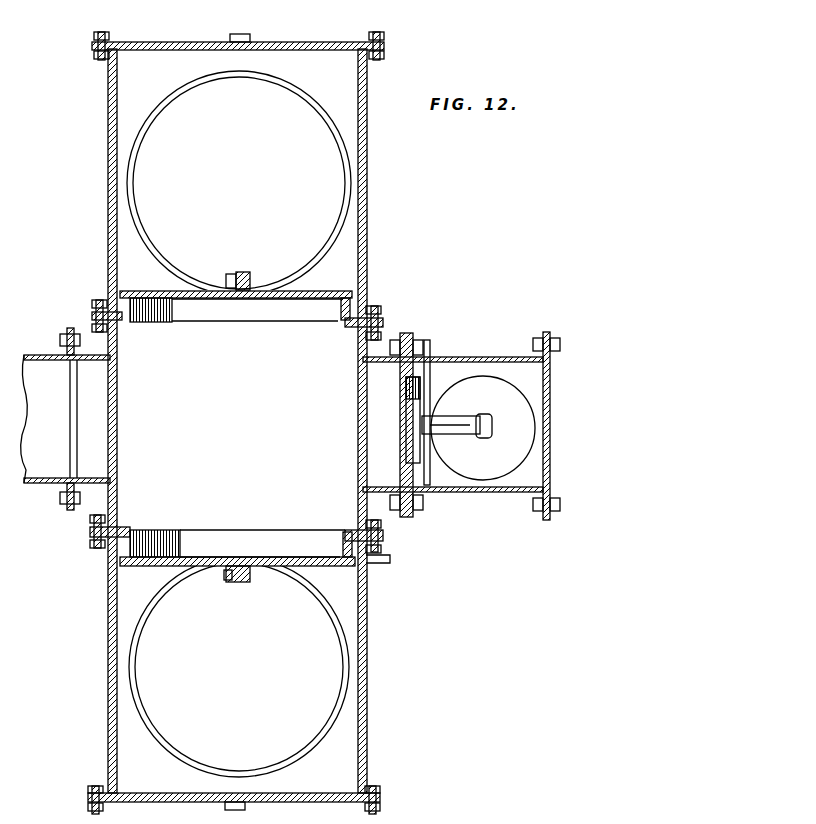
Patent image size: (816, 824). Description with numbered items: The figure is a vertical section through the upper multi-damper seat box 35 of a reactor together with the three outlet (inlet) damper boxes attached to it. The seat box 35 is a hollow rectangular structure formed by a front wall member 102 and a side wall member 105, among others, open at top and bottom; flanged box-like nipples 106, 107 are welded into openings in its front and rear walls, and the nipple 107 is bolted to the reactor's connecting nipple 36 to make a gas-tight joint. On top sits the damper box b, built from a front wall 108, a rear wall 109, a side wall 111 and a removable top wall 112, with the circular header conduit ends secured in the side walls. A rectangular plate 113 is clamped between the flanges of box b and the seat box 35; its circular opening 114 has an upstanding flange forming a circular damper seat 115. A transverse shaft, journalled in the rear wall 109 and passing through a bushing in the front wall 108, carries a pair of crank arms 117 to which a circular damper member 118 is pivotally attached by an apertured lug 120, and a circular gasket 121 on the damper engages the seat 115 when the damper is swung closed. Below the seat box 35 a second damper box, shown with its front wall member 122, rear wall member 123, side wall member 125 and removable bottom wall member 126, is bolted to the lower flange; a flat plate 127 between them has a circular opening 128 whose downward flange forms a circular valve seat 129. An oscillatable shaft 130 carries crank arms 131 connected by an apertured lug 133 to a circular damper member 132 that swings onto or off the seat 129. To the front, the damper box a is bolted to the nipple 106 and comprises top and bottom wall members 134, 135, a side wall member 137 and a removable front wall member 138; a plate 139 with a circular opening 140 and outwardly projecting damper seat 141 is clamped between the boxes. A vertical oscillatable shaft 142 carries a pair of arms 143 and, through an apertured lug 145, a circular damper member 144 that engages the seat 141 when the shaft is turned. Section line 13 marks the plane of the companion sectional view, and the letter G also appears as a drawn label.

The section line 13— 13 is at (77, 172).
The multi-damper seat box 35 is at (390, 322).
The connecting fitting or nipple 36 is at (44, 355).
The front wall member 102 is at (384, 526).
The side wall member 105 is at (292, 461).
The flanged box-like nipple 106 is at (362, 492).
The flanged box-like nipple 107 is at (100, 312).
The front wall 108 is at (366, 258).
The rear wall 109 is at (108, 226).
The side wall 111 is at (352, 100).
The top wall 112 is at (302, 42).
The rectangular plate 113 is at (117, 324).
The circular opening 114 is at (346, 328).
The circular damper seat 115 is at (142, 296).
The crank arms 117 is at (234, 274).
The circular damper member 118 is at (316, 292).
The apertured lug 120 is at (250, 278).
The circular gasket 121 is at (338, 300).
The front wall member 122 is at (366, 716).
The rear wall member 123 is at (108, 722).
The side wall member 125 is at (340, 775).
The bottom wall member 126 is at (286, 802).
The flat rectangular plate 127 is at (134, 526).
The circular opening 128 is at (140, 532).
The circular valve seat 129 is at (176, 536).
The oscillatable shaft 130 is at (388, 564).
The crank arms 131 is at (218, 568).
The circular damper member 132 is at (156, 566).
The apertured lug 133 is at (238, 584).
The top wall member 134 is at (500, 357).
The bottom wall member 135 is at (490, 493).
The side wall member 137 is at (544, 483).
The front wall member 138 is at (552, 442).
The flat rectangular plate 139 is at (406, 372).
The circular opening 140 is at (406, 390).
The circular damper seat 141 is at (408, 400).
The vertical oscillatable shaft 142 is at (432, 354).
The arms 143 is at (470, 418).
The circular damper member 144 is at (506, 461).
The apertured lug 145 is at (492, 428).
The outlet (inlet) damper box a is at (490, 358).
The outlet (inlet) damper box b is at (372, 224).
The housing section G is at (370, 662).